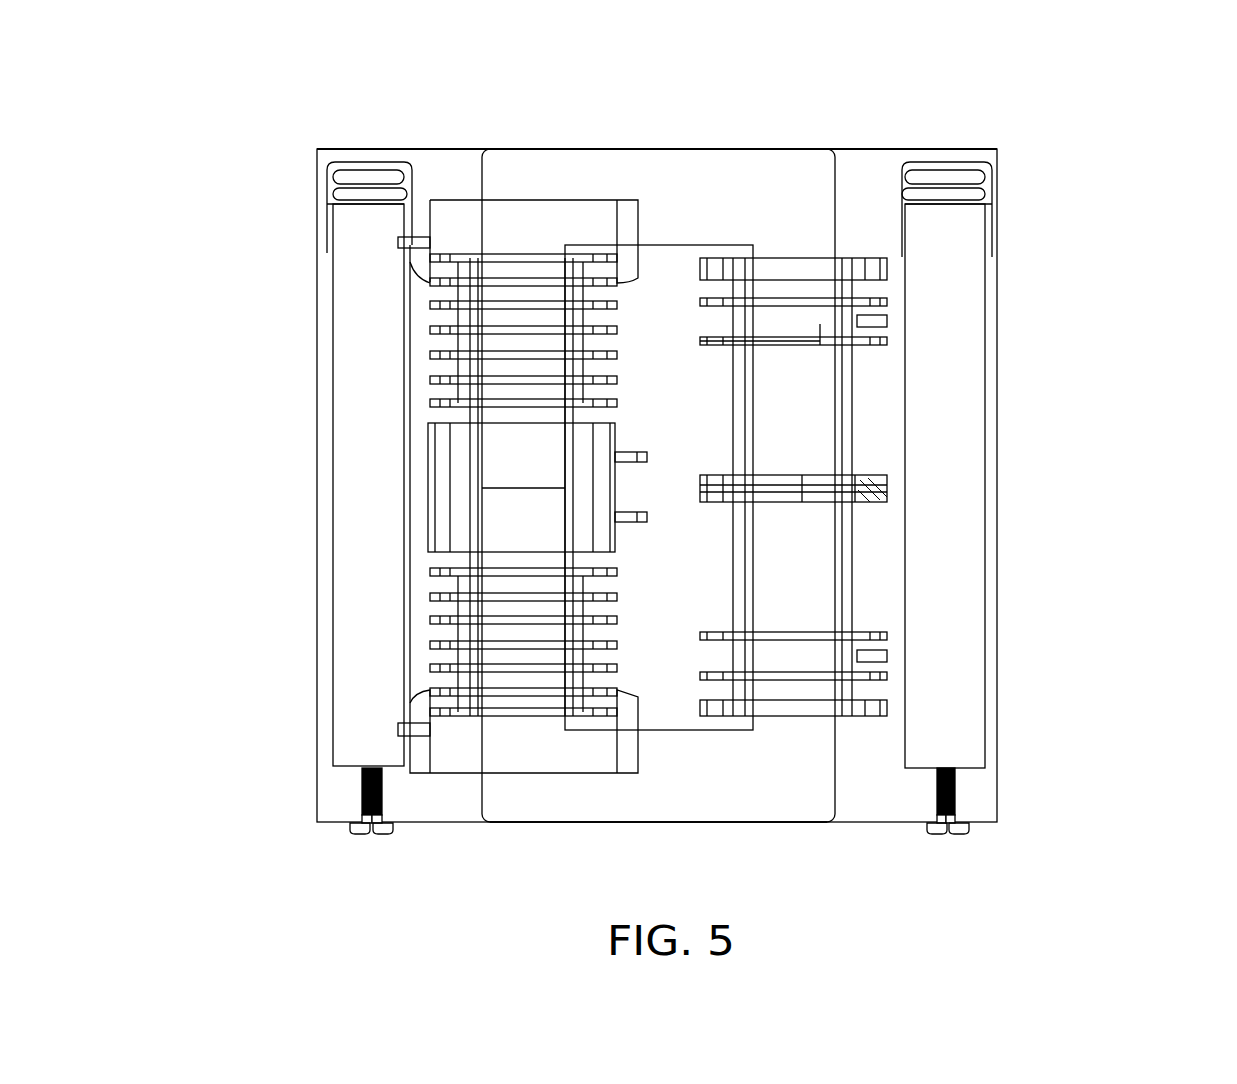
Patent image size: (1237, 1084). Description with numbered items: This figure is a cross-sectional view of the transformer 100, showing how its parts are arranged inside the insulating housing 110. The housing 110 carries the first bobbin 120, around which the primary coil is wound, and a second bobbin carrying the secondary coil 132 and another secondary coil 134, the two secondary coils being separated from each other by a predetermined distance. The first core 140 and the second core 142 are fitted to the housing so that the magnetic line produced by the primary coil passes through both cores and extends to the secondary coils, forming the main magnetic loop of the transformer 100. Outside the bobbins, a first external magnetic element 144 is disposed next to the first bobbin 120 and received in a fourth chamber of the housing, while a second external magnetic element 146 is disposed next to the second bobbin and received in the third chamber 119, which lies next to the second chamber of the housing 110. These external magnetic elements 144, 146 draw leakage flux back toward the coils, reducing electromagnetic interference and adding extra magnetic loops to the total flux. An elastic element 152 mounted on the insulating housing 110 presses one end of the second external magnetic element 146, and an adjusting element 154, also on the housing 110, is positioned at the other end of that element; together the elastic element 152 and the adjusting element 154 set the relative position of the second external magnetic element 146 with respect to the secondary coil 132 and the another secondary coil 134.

The transformer 100 is at (1212, 101).
The insulating housing 110 is at (850, 163).
The third chamber 119 is at (322, 191).
The first bobbin 120 is at (805, 415).
The secondary coil 132 is at (410, 267).
The another secondary coil 134 is at (410, 565).
The first core 140 is at (663, 163).
The second core 142 is at (655, 823).
The first external magnetic element 144 is at (968, 327).
The second external magnetic element 146 is at (353, 467).
The elastic element 152 is at (345, 163).
The adjusting element 154 is at (362, 778).